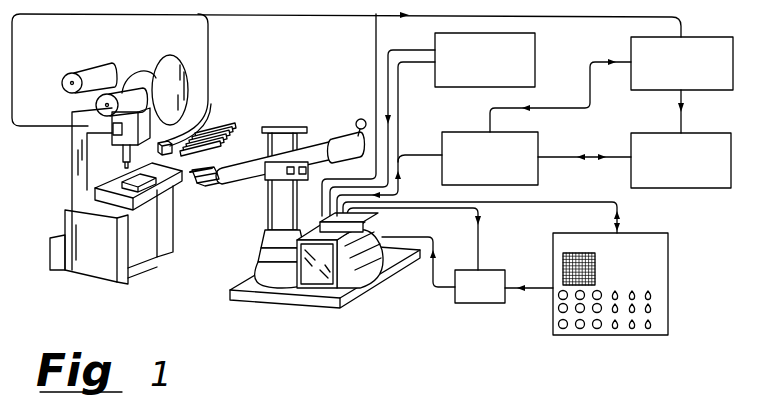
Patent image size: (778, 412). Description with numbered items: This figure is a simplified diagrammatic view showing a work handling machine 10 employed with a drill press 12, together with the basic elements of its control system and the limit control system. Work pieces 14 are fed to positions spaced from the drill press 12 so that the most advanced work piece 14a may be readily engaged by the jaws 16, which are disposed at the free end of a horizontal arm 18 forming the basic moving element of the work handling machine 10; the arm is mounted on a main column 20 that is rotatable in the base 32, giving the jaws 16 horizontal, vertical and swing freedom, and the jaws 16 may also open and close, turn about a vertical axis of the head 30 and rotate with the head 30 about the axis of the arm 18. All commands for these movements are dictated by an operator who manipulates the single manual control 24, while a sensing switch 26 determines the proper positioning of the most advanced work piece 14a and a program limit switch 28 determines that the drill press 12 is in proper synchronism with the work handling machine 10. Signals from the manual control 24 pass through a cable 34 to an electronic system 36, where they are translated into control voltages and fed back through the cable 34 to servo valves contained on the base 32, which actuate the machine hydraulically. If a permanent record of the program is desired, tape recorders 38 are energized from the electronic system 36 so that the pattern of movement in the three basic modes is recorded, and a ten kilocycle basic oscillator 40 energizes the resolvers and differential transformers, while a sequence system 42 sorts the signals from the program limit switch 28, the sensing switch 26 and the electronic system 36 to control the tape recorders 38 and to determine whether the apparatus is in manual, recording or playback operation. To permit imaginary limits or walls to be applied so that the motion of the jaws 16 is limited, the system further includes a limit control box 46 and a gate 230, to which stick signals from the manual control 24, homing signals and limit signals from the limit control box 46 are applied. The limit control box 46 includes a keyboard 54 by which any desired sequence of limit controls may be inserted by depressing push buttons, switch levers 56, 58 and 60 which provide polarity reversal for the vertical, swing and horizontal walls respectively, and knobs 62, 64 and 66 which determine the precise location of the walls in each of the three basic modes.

The work handling machine 10 is at (368, 310).
The drill press 12 is at (92, 265).
The work pieces 14 is at (230, 139).
The most advanced work piece 14a is at (195, 158).
The jaws 16 is at (200, 178).
The horizontal arm 18 is at (316, 146).
The main column 20 is at (293, 133).
The manual control 24 is at (361, 119).
The sensing switch 26 is at (202, 111).
The program limit switch 28 is at (113, 128).
The head 30 is at (212, 182).
The base 32 is at (315, 292).
The cable 34 is at (410, 155).
The electronic system 36 is at (533, 138).
The tape recorders 38 is at (706, 140).
The basic oscillator 40 is at (520, 50).
The sequence system 42 is at (693, 42).
The limit control box 46 is at (657, 265).
The keyboard 54 is at (563, 257).
The switch levers 56 is at (613, 331).
The switch levers 58 is at (636, 333).
The switch levers 60 is at (653, 297).
The knob 62 is at (558, 324).
The knob 64 is at (580, 330).
The knob 66 is at (597, 330).
The gate 230 is at (467, 304).